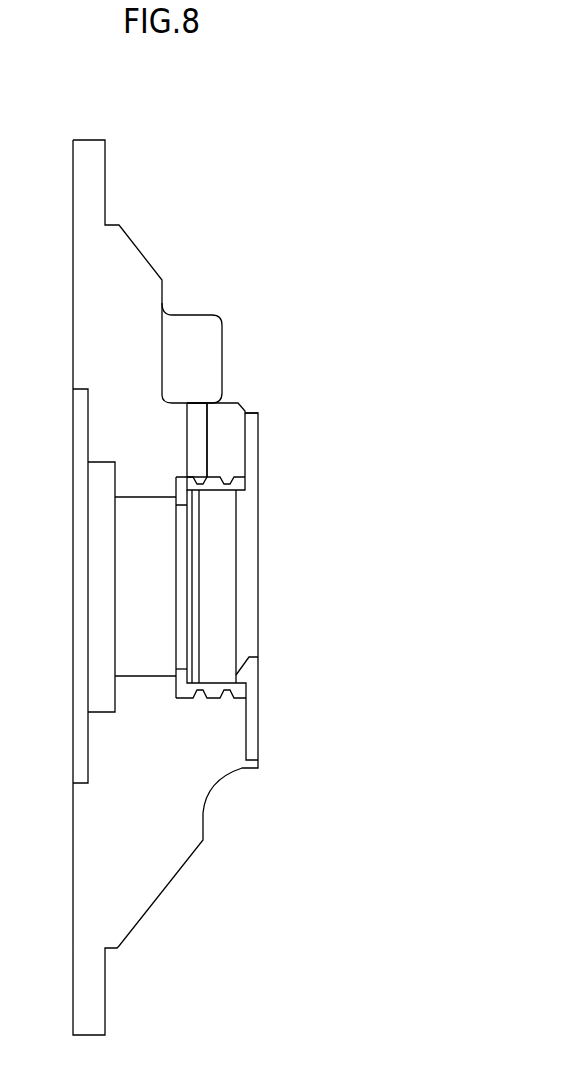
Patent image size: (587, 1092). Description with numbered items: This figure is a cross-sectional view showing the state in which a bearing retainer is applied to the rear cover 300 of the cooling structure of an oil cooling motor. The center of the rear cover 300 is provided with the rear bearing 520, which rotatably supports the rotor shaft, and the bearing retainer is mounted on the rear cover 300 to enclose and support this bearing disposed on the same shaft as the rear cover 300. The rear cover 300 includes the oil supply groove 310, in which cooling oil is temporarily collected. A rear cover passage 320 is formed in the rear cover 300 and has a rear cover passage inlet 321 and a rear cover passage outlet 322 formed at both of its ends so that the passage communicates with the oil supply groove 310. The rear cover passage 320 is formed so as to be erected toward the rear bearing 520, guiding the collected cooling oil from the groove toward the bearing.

The rear cover 300 is at (223, 920).
The front oil supply groove 310 is at (172, 343).
The rear cover passage 320 is at (197, 460).
The rear cover passage inlet 321 is at (196, 408).
The rear cover passage outlet 322 is at (203, 486).
The rear bearing 520 is at (208, 690).